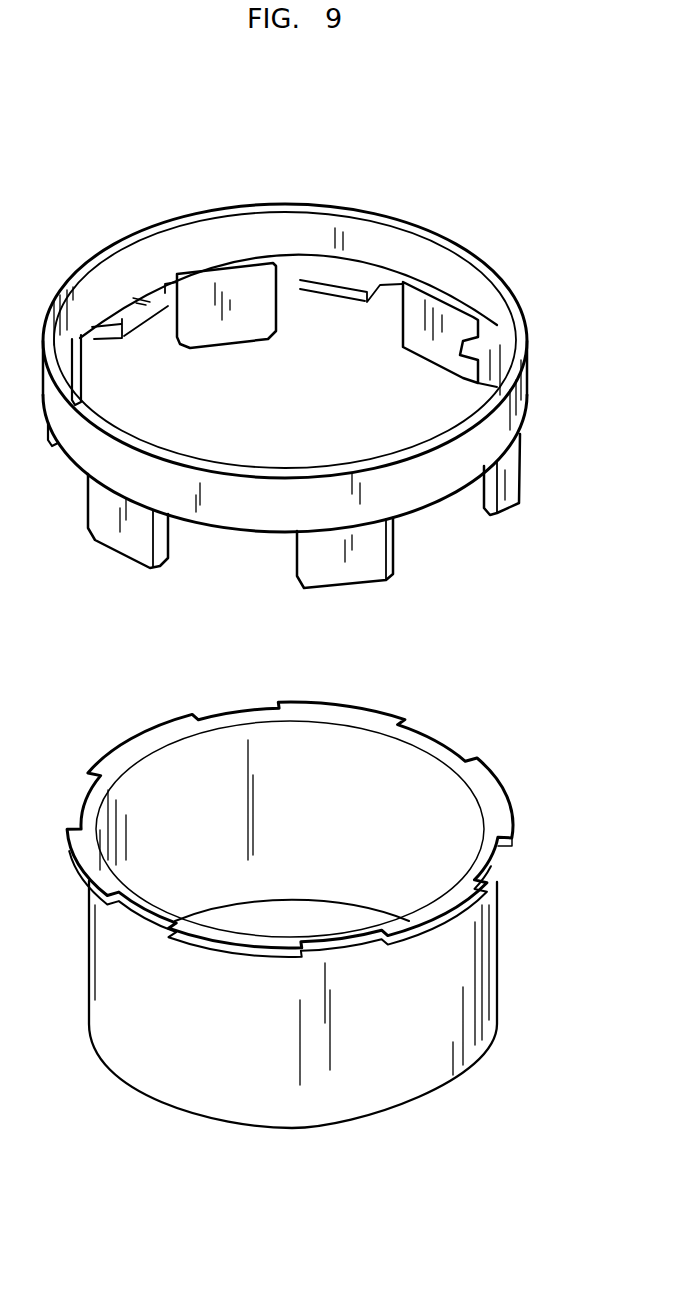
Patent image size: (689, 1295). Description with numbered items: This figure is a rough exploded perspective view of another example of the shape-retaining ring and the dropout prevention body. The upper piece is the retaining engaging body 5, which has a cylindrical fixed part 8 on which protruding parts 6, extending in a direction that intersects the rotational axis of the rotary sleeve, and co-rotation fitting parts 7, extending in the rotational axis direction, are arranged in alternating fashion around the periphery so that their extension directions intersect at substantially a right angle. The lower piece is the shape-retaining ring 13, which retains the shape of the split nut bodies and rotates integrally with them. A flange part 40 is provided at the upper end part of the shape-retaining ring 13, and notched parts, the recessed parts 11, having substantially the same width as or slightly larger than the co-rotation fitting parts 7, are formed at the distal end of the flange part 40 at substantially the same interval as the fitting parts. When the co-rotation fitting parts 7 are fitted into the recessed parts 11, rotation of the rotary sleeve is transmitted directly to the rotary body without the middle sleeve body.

The retaining engaging body 5 is at (523, 330).
The protruding parts 6 is at (478, 386).
The co-rotation fitting parts 7 is at (488, 518).
The cylindrical fixed part 8 is at (93, 457).
The recessed parts 11 is at (503, 858).
The shape-retaining ring 13 is at (176, 1086).
The flange part 40 is at (354, 710).